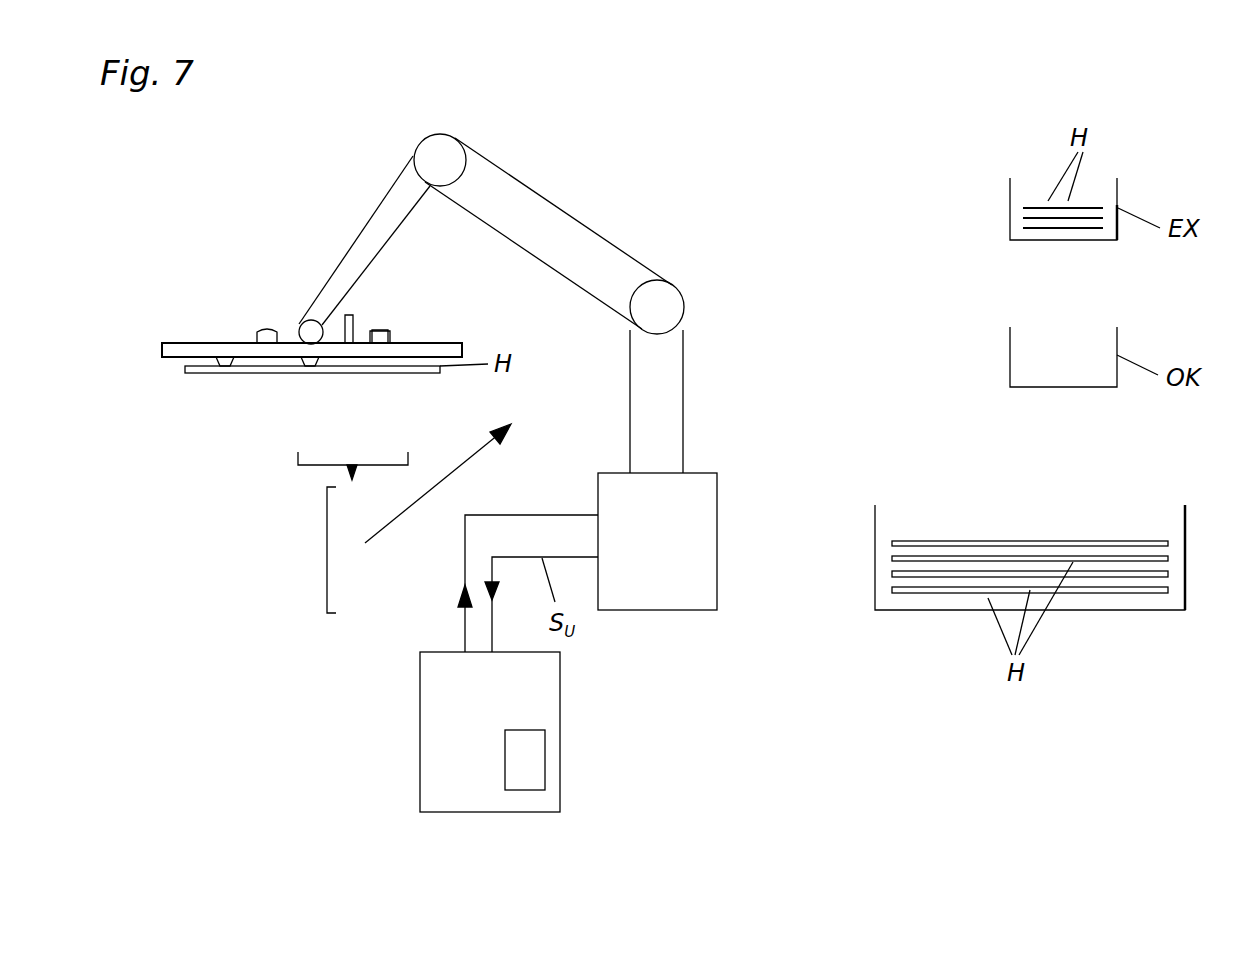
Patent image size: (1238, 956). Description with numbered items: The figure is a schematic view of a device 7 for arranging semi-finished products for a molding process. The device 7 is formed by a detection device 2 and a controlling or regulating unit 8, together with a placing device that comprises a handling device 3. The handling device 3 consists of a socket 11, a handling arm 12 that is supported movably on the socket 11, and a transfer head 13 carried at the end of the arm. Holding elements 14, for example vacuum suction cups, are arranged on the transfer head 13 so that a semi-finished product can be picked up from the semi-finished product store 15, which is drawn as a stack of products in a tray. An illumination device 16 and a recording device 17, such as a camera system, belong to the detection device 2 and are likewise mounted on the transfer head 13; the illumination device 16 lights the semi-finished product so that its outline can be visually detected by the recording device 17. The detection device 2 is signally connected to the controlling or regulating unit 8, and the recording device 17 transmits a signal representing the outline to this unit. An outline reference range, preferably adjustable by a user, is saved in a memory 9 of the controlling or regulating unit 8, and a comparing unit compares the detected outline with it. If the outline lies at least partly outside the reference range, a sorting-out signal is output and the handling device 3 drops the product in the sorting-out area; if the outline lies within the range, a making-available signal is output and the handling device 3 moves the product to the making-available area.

The detection device 2 is at (353, 485).
The handling device 3 is at (427, 493).
The device for arranging semi-finished products 7 is at (318, 548).
The controlling or regulating unit 8 is at (420, 682).
The memory 9 is at (547, 763).
The socket 11 is at (675, 532).
The handling arm 12 is at (568, 238).
The transfer head 13 is at (232, 343).
The holding elements 14 is at (393, 347).
The semi-finished product store 15 is at (878, 553).
The illumination device 16 is at (265, 327).
The recording device 17 is at (350, 358).